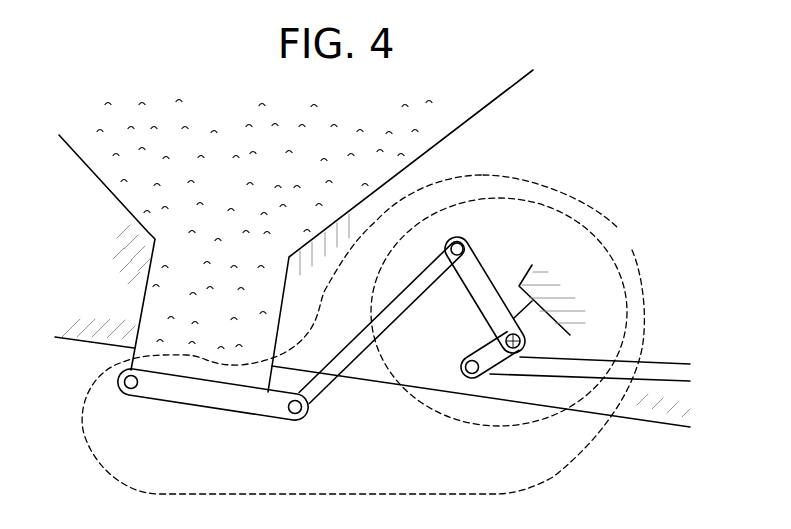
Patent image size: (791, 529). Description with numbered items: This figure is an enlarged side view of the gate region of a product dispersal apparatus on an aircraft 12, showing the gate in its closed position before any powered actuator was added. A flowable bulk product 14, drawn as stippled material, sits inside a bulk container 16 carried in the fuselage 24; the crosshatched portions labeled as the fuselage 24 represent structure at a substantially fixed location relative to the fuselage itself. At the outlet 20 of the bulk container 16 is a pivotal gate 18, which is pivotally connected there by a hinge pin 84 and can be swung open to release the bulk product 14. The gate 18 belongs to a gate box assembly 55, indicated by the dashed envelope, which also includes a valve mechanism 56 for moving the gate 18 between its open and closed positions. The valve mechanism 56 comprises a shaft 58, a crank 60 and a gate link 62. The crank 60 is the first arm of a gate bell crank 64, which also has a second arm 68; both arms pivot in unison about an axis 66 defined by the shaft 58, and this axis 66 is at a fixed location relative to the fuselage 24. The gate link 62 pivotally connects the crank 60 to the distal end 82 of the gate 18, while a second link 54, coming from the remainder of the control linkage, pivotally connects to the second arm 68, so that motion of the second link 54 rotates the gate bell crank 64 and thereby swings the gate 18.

The aircraft 12 is at (646, 424).
The flowable bulk product 14 is at (199, 197).
The bulk container 16 is at (454, 133).
The pivotal gate 18 is at (228, 414).
The outlet 20 is at (181, 377).
The fuselage 24 is at (522, 273).
The second link 54 is at (663, 363).
The gate box assembly 55 is at (578, 192).
The valve mechanism 56 is at (612, 257).
The shaft 58 is at (521, 350).
The crank 60 is at (485, 270).
The gate link 62 is at (413, 283).
The gate bell crank 64 is at (478, 337).
The axis 66 is at (509, 337).
The second arm 68 is at (505, 374).
The distal end 82 is at (277, 421).
The hinge pin 84 is at (129, 390).